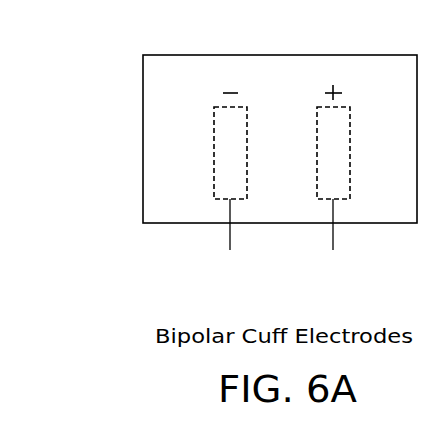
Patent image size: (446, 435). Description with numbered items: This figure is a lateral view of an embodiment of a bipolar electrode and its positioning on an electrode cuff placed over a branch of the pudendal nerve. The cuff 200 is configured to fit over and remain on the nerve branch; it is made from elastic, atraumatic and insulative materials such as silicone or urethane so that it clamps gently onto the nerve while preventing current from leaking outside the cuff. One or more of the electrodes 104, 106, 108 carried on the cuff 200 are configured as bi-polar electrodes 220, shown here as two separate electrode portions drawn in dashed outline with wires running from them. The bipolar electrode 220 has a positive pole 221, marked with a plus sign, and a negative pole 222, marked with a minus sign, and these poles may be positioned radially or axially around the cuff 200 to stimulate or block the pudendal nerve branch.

The cuff 200 is at (143, 103).
The bi-polar electrodes 220 is at (233, 167).
The positive pole 221 is at (350, 110).
The negative pole 222 is at (155, 121).
The electrode 104 is at (133, 168).
The electrode 106 is at (133, 168).
The electrode 108 is at (133, 168).